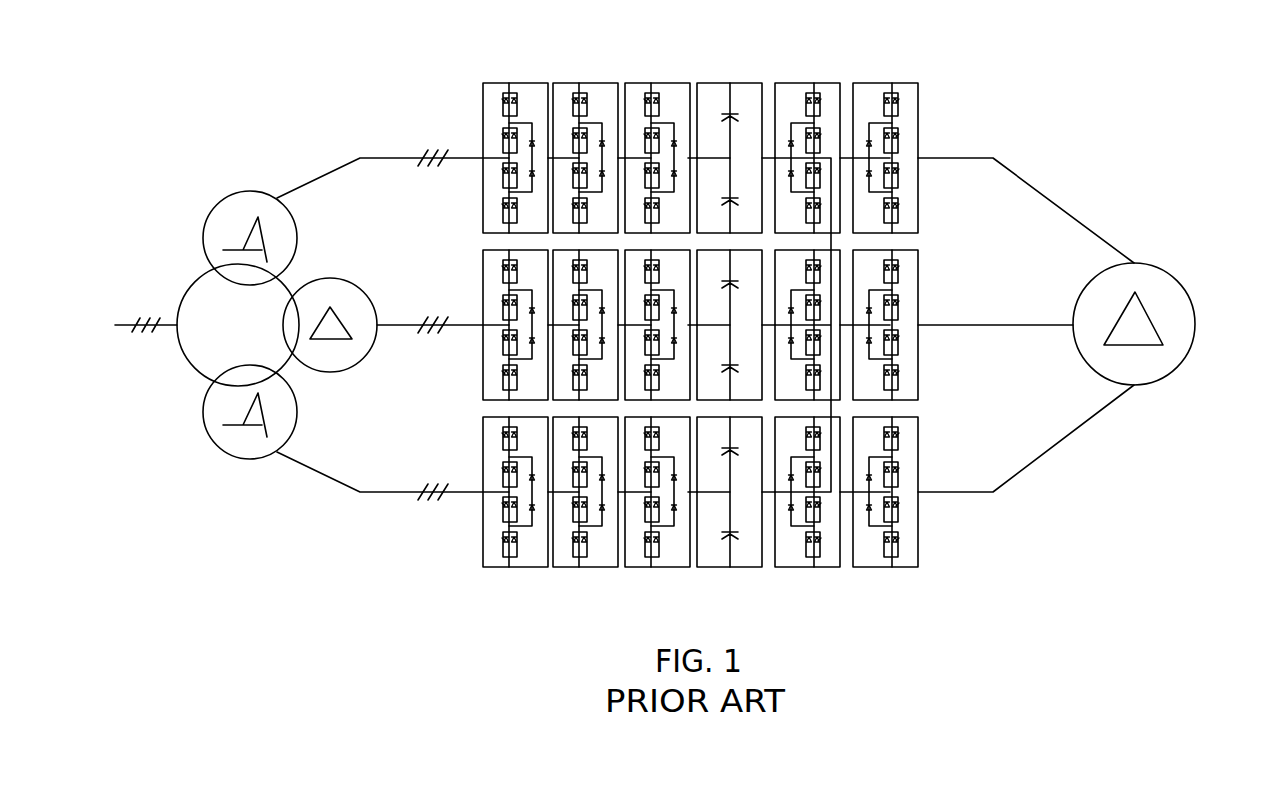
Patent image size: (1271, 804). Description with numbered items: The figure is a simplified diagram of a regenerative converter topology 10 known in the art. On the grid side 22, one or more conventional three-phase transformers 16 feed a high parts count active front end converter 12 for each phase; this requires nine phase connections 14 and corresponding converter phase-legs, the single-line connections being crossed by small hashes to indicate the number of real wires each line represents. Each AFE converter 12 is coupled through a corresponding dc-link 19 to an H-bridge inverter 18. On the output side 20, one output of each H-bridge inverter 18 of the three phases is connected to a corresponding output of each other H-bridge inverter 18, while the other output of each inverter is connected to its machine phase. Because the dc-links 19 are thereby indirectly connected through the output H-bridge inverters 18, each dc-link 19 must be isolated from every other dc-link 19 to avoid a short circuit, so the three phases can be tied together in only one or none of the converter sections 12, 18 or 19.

The regenerative converter topology 10 is at (685, 26).
The active front end (AFE) converter 12 is at (548, 75).
The phase connections 14 is at (388, 157).
The three-phase transformer 16 is at (222, 188).
The H-bridge inverter 18 is at (848, 75).
The dc-link 19 is at (728, 75).
The output side 20 is at (1059, 200).
The grid side 22 is at (188, 377).